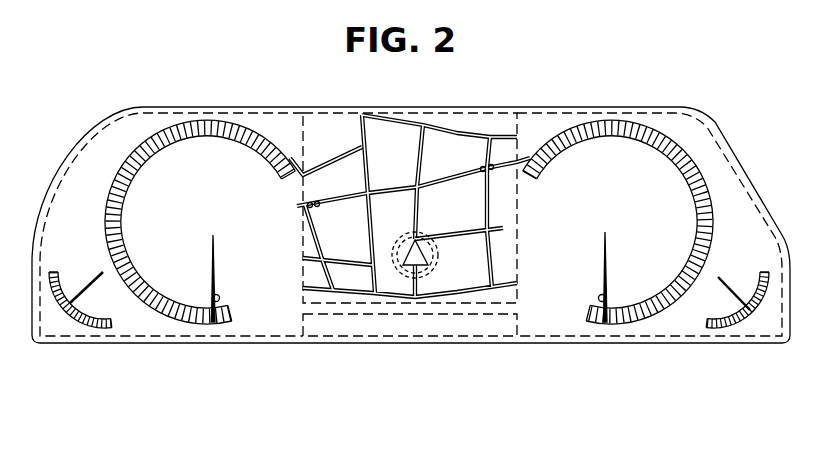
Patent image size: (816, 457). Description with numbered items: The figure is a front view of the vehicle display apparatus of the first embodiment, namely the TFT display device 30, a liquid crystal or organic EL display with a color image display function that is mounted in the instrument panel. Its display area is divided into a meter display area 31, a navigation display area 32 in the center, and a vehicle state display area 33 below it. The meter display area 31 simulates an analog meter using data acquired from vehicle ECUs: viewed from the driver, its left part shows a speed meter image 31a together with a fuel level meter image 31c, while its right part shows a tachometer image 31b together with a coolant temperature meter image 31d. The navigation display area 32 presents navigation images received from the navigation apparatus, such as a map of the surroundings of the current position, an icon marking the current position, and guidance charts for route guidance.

The TFT display device 30 is at (663, 107).
The meter display area 31 is at (188, 113).
The speed meter image 31a is at (245, 299).
The tachometer image 31b is at (572, 300).
The fuel level meter image 31c is at (61, 331).
The coolant temperature meter image 31d is at (762, 333).
The navigation display area 32 is at (422, 112).
The vehicle state display area 33 is at (370, 337).